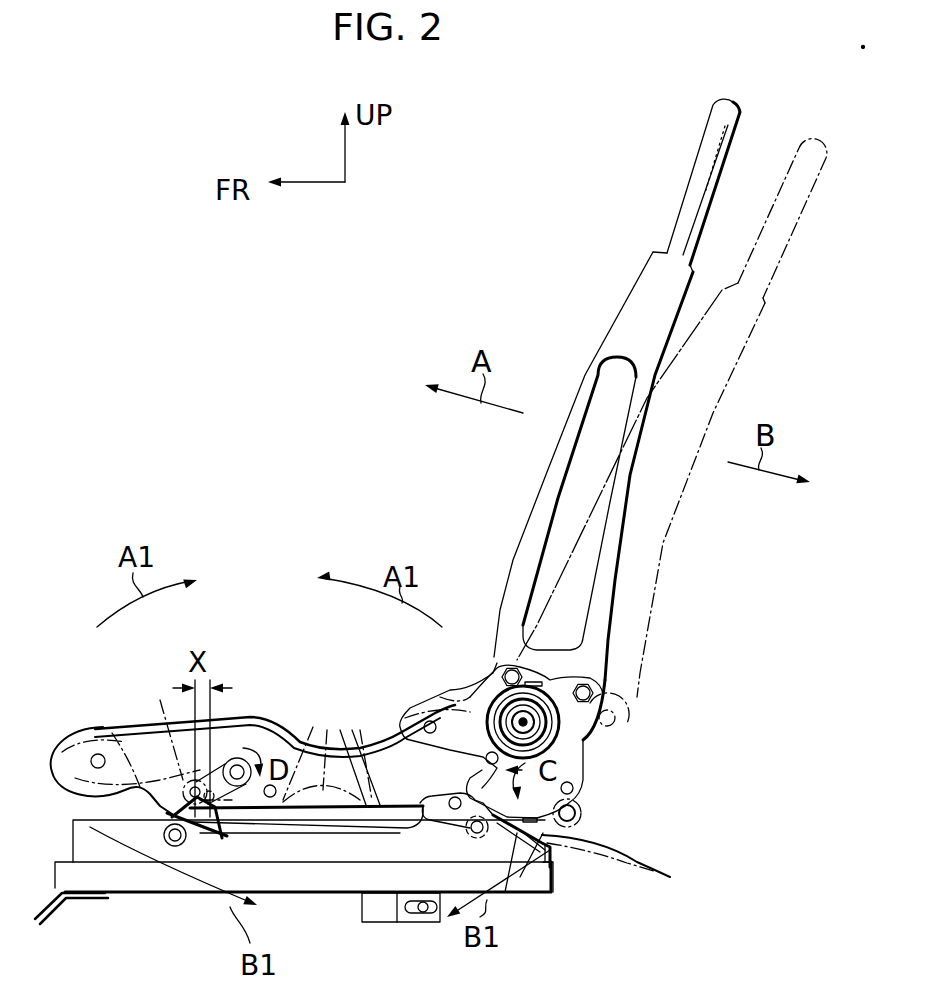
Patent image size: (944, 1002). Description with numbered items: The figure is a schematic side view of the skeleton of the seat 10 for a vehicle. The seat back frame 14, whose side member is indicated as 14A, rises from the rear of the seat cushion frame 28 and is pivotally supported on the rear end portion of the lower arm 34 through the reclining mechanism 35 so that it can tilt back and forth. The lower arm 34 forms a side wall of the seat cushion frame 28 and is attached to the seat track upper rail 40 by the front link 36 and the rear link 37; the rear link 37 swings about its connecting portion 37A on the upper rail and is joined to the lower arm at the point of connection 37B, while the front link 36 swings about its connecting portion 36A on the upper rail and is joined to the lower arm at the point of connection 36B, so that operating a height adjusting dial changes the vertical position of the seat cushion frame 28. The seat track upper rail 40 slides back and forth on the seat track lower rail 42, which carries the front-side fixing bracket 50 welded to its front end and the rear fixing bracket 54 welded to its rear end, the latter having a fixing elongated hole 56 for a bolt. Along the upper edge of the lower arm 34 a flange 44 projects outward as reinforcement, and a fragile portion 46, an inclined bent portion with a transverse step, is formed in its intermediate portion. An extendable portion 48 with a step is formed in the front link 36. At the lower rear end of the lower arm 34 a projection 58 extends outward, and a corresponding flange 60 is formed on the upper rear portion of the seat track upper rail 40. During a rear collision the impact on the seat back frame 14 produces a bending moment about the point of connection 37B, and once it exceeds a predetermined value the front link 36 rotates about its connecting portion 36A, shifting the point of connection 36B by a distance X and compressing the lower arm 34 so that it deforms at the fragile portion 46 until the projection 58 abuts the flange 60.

The seat 10 is at (371, 494).
The seat back frame 14 is at (742, 254).
The seat back side frame 14A is at (633, 522).
The seat cushion frame 28 is at (289, 706).
The lower arm 34 is at (58, 733).
The reclining mechanism 35 is at (585, 738).
The front link 36 is at (222, 750).
The connecting portion of front link to seat track upper rail 36A is at (173, 847).
The point of connection of front link to lower arm 36B is at (232, 836).
The rear link 37 is at (456, 825).
The connecting portion of rear link to seat track upper rail 37A is at (475, 834).
The point of connection of rear link to lower arm 37B is at (483, 788).
The seat track upper rail 40 is at (550, 858).
The seat track lower rail 42 is at (560, 897).
The flange 44 is at (140, 702).
The fragile portion 46 is at (362, 730).
The extendable portion 48 is at (193, 822).
The front-side fixing bracket 50 is at (80, 900).
The rear fixing bracket 54 is at (410, 925).
The fixing elongated hole 56 is at (420, 923).
The projection 58 is at (630, 873).
The flange 60 is at (505, 892).